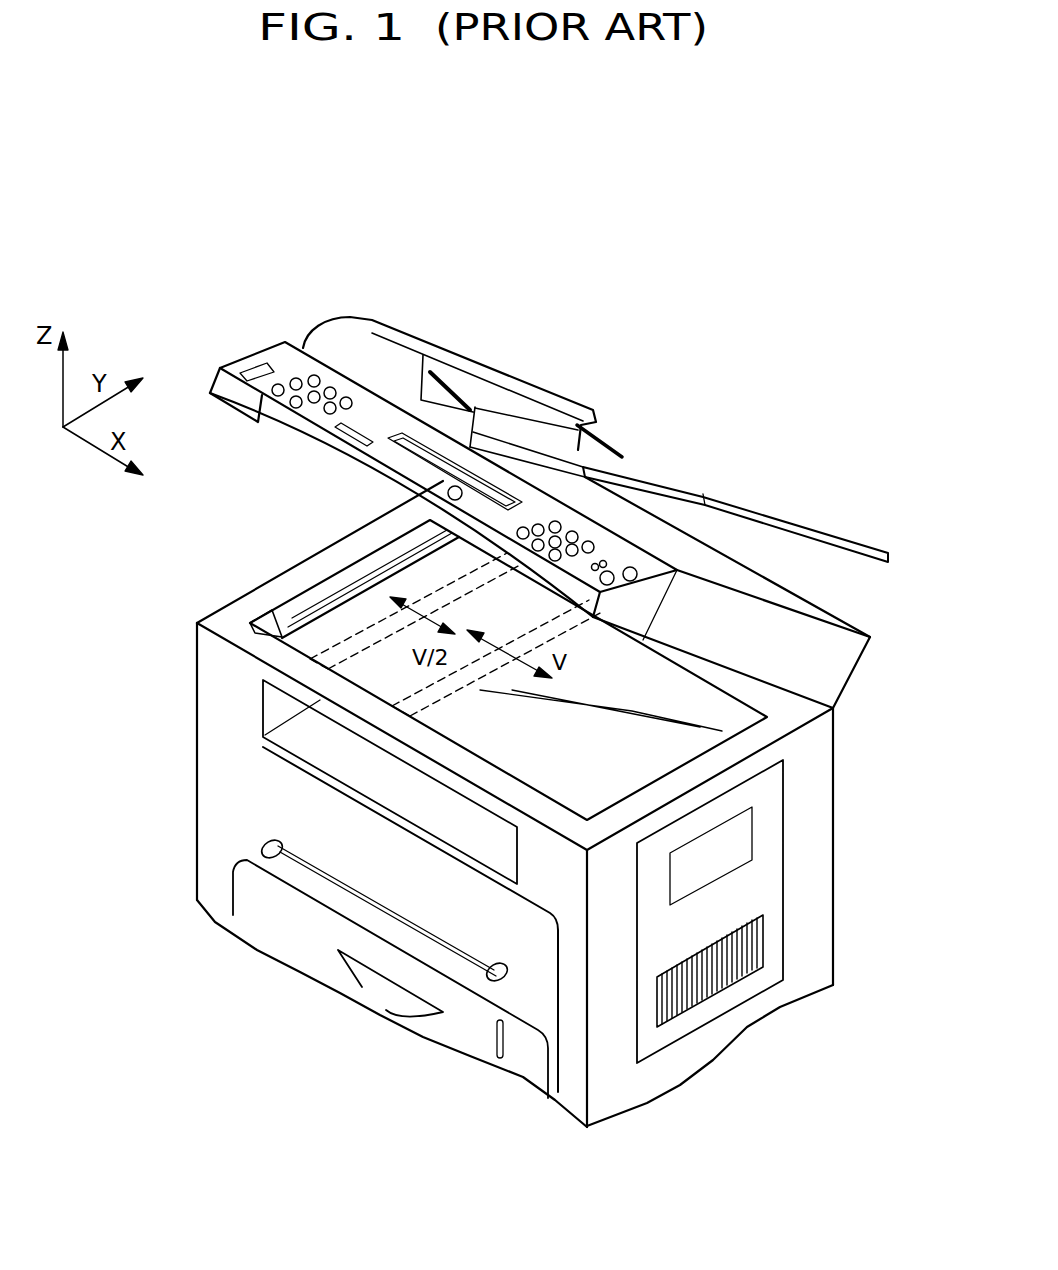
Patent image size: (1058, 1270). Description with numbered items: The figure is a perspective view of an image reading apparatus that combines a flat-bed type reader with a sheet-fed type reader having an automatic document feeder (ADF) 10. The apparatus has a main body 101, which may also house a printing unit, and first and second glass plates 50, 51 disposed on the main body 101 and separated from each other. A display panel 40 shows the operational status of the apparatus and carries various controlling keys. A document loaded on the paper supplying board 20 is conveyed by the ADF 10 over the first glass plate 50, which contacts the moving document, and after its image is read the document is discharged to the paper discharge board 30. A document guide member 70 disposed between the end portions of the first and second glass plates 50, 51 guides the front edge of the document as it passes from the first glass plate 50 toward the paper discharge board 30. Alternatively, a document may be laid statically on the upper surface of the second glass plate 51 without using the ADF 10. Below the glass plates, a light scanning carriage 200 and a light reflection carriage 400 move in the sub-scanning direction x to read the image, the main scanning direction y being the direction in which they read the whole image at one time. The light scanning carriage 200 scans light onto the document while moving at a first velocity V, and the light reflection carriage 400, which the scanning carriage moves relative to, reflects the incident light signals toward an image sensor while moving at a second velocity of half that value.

The automatic document feeder 10 is at (499, 372).
The paper supplying board 20 is at (720, 492).
The paper discharge board 30 is at (750, 578).
The display panel 40 is at (278, 366).
The first glass plate 50 is at (310, 598).
The second glass plate 51 is at (657, 763).
The document guide member 70 is at (300, 620).
The main body 101 is at (810, 871).
The light scanning carriage 200 is at (423, 694).
The light reflection carriage 400 is at (347, 656).